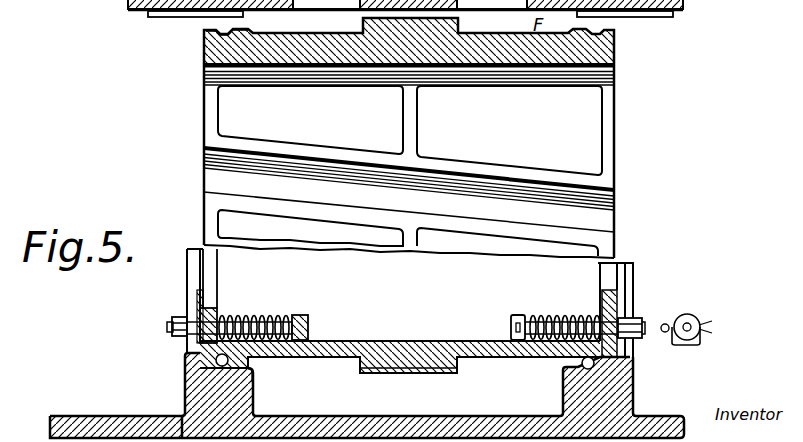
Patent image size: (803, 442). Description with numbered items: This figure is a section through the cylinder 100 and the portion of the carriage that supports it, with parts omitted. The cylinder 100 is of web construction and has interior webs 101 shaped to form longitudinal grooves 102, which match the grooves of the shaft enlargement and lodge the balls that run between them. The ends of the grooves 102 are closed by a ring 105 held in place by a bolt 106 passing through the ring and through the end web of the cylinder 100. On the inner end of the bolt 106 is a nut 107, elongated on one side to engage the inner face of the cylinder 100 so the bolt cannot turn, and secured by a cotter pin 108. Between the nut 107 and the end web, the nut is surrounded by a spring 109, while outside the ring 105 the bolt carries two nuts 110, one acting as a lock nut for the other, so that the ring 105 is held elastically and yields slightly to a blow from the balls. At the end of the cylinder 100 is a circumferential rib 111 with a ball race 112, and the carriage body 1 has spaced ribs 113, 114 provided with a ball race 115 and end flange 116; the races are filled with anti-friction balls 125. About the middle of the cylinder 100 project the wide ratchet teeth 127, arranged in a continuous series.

The casting 1 is at (143, 12).
The cylinder 100 is at (615, 50).
The interior webs 101 is at (271, 144).
The longitudinal grooves 102 is at (512, 197).
The ring 105 is at (198, 298).
The bolt 106 is at (217, 313).
The nut 107 is at (524, 315).
The cotter pin 108 is at (511, 327).
The spring 109 is at (291, 316).
The nuts 110 is at (187, 343).
The circumferential rib 111 is at (203, 35).
The ball race 112 is at (204, 48).
The rib 113 is at (208, 401).
The rib 114 is at (603, 383).
The ball race 115 is at (580, 368).
The end flange 116 is at (612, 358).
The anti-friction balls 125 is at (255, 373).
The ratchet teeth 127 is at (437, 22).